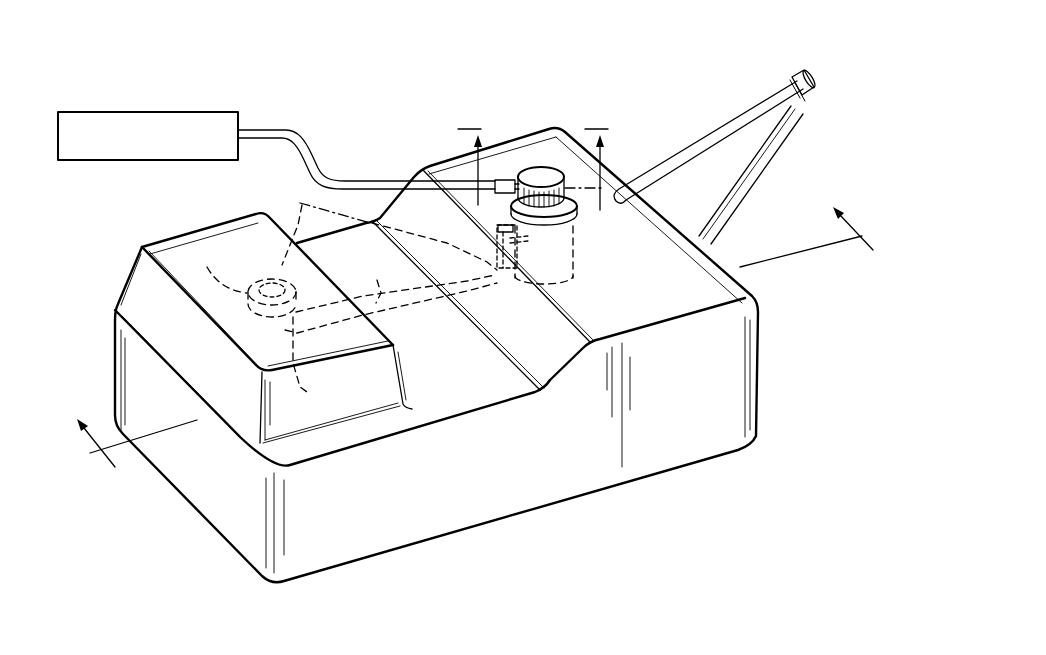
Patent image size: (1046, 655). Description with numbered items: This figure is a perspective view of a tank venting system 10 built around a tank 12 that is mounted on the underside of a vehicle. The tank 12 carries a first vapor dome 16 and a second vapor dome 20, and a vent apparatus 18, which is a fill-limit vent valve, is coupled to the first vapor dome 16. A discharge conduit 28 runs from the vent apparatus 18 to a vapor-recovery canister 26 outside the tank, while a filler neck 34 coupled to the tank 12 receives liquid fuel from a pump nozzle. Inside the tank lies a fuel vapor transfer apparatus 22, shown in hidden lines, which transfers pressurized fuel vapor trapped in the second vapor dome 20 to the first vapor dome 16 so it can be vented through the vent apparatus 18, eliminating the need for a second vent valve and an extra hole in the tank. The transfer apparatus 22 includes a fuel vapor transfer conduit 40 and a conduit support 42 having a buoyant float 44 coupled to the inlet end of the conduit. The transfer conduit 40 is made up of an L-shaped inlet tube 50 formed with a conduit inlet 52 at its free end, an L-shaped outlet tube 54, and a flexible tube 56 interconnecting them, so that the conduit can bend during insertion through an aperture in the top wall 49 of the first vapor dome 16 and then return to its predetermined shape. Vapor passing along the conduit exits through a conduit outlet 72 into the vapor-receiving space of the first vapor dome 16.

The tank venting system 10 is at (575, 93).
The tank 12 is at (540, 472).
The first vapor dome 16 is at (626, 159).
The vent apparatus 18 is at (536, 150).
The second vapor dome 20 is at (121, 270).
The fuel vapor transfer apparatus 22 is at (415, 328).
The vapor-recovery canister 26 is at (196, 112).
The discharge conduit 28 is at (320, 165).
The filler neck 34 is at (748, 197).
The fuel vapor transfer conduit 40 is at (480, 292).
The conduit support 42 is at (320, 221).
The buoyant float 44 is at (217, 268).
The top wall 49 is at (652, 294).
The L-shaped inlet tube 50 is at (313, 364).
The conduit inlet 52 is at (272, 272).
The L-shaped outlet tube 54 is at (470, 253).
The flexible tube 56 is at (366, 278).
The conduit outlet 72 is at (504, 231).